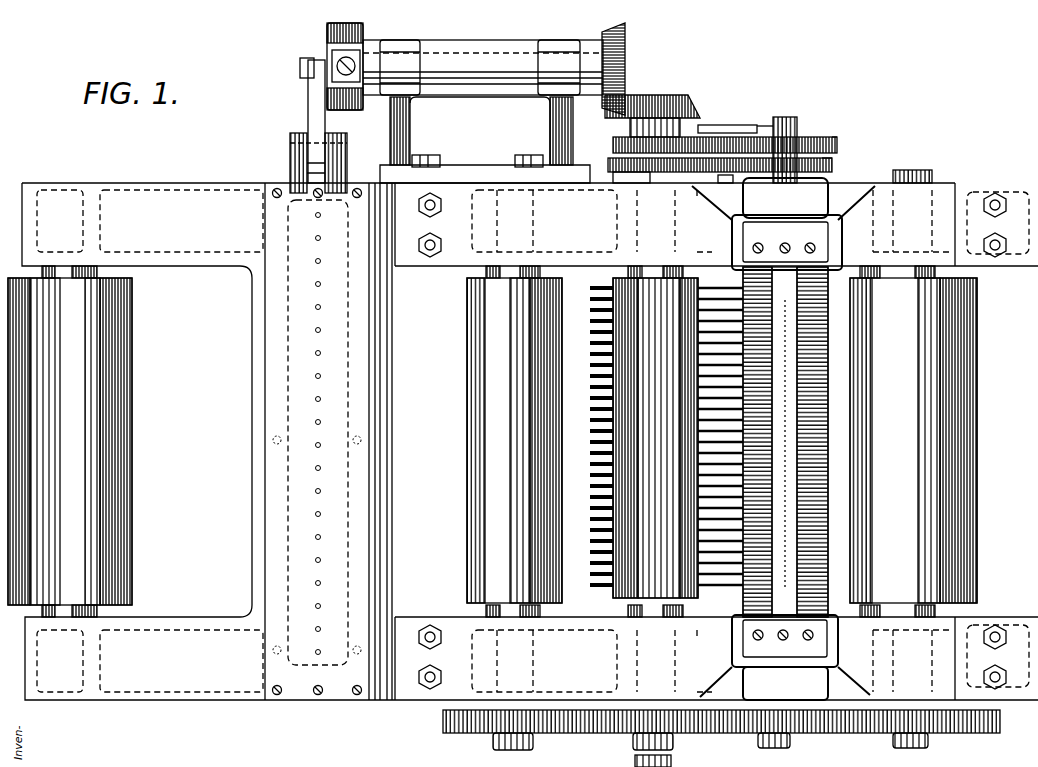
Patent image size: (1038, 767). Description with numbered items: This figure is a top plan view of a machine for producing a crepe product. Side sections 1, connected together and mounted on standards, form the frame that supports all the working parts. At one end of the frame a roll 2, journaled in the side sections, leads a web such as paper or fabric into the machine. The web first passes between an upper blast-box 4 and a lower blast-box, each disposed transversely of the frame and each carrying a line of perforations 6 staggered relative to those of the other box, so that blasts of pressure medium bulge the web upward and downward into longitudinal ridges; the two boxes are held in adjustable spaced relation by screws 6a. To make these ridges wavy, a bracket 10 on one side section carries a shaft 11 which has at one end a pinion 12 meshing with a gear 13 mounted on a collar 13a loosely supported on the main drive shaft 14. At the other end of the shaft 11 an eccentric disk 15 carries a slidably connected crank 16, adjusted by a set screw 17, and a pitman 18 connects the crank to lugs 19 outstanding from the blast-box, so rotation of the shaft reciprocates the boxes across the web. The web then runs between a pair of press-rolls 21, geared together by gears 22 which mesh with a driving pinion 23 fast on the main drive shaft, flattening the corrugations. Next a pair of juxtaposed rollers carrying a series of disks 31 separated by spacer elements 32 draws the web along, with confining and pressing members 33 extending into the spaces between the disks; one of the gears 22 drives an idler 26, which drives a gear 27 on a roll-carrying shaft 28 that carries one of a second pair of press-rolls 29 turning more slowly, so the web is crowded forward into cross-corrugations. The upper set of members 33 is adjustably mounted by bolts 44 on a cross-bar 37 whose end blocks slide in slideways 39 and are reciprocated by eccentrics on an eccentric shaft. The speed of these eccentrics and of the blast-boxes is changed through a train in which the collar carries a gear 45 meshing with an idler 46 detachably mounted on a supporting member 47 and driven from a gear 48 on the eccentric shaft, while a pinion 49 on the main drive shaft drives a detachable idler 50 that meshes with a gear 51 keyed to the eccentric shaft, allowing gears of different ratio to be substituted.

The side sections 1 is at (530, 435).
The roll 2 is at (133, 378).
The upper blast-box 4 is at (288, 338).
The perforations 6 is at (318, 498).
The screws 6a is at (352, 697).
The bracket 10 is at (505, 40).
The shaft 11 is at (447, 52).
The pinion 12 is at (627, 38).
The gear 13 is at (698, 110).
The collar 13a is at (682, 128).
The main drive shaft 14 is at (655, 95).
The disk 15 is at (327, 32).
The crank 16 is at (300, 68).
The set screw 17 is at (362, 58).
The pitman 18 is at (308, 112).
The lugs 19 is at (290, 150).
The press-rolls 21 is at (467, 412).
The gears 22 is at (448, 733).
The driving pinion 23 is at (622, 720).
The idler 26 is at (793, 733).
The gear 27 is at (935, 733).
The roll-carrying shaft 28 is at (653, 760).
The press-rolls 29 is at (977, 497).
The disks 31 is at (592, 505).
The spacer elements 32 is at (604, 583).
The confining and pressing members 33 is at (845, 497).
The cross-bar 37 is at (815, 403).
The slideways 39 is at (783, 457).
The bolts 44 is at (790, 455).
The gear 45 is at (613, 140).
The idler 46 is at (762, 123).
The supporting member 47 is at (738, 125).
The gear 48 is at (837, 139).
The pinion 49 is at (608, 163).
The idler 50 is at (745, 190).
The gear 51 is at (832, 165).